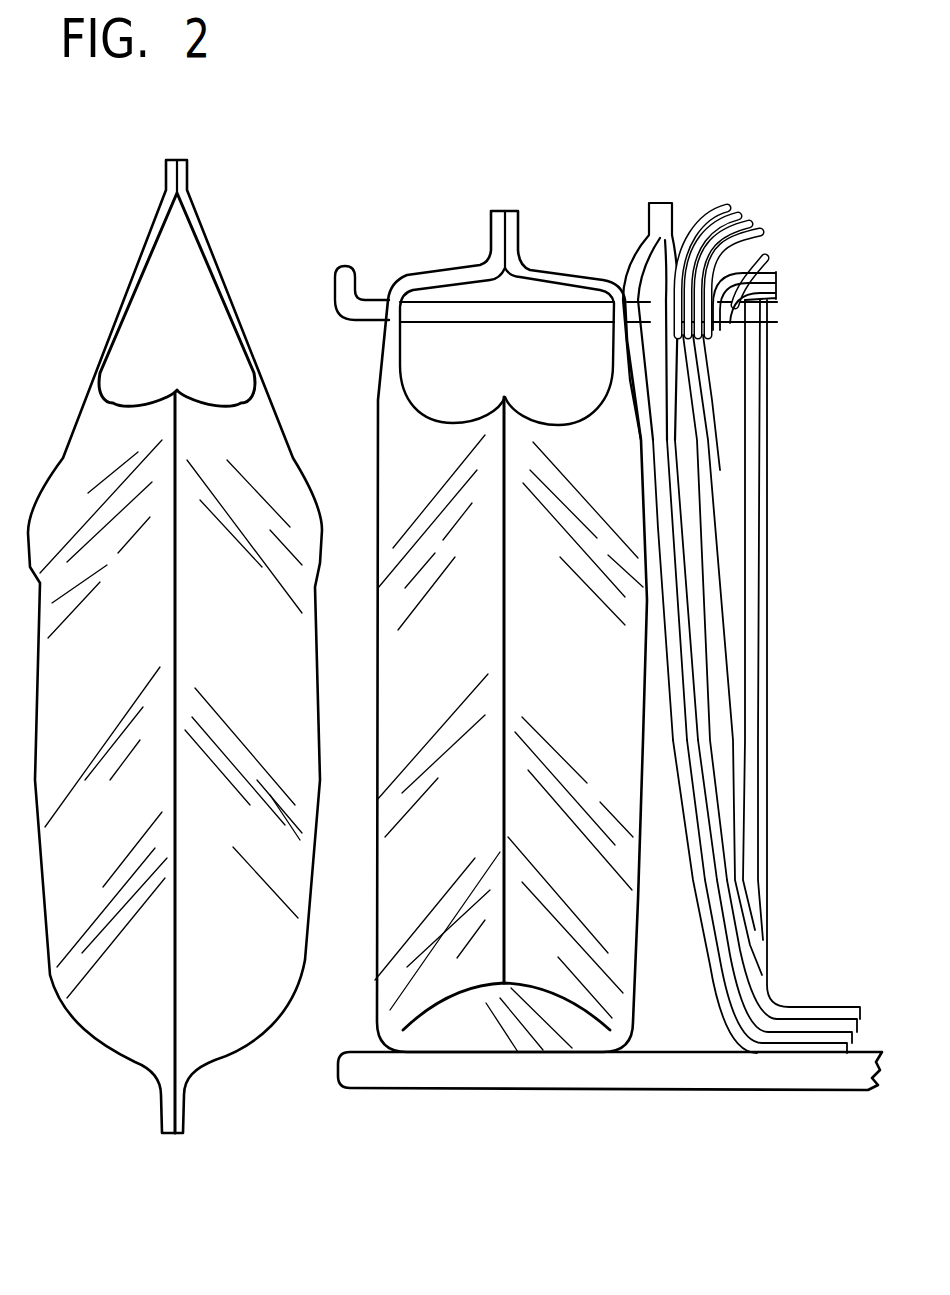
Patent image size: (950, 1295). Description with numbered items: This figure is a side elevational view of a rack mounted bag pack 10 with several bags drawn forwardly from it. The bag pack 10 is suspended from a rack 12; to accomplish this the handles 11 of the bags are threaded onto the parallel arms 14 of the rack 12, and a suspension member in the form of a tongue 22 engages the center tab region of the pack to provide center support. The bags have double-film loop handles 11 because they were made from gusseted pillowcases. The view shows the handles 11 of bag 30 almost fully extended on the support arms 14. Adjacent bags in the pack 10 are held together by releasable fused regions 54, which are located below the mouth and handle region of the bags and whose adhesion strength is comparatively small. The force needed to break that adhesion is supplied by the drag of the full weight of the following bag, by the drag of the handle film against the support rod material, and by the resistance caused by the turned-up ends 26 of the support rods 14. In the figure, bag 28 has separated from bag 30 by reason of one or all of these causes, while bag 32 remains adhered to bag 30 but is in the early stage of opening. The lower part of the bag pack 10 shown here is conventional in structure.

The bag pack 10 is at (705, 706).
The handles 11 is at (425, 268).
The rack 12 is at (768, 540).
The parallel arms 14 is at (493, 325).
The tongue 22 is at (775, 257).
The turned-up ends 26 is at (337, 277).
The bag 28 is at (72, 427).
The bag 30 is at (471, 415).
The bag 32 is at (660, 204).
The releasable fused regions 54 is at (647, 450).